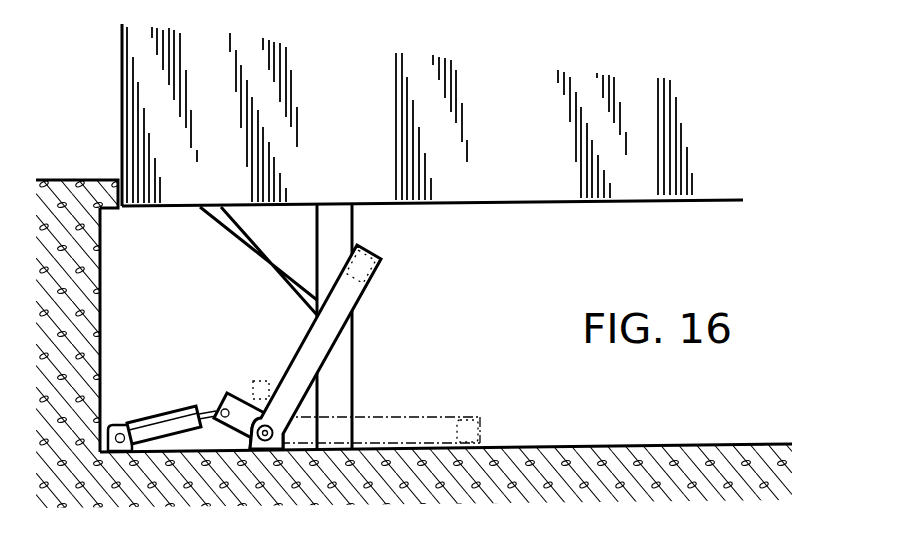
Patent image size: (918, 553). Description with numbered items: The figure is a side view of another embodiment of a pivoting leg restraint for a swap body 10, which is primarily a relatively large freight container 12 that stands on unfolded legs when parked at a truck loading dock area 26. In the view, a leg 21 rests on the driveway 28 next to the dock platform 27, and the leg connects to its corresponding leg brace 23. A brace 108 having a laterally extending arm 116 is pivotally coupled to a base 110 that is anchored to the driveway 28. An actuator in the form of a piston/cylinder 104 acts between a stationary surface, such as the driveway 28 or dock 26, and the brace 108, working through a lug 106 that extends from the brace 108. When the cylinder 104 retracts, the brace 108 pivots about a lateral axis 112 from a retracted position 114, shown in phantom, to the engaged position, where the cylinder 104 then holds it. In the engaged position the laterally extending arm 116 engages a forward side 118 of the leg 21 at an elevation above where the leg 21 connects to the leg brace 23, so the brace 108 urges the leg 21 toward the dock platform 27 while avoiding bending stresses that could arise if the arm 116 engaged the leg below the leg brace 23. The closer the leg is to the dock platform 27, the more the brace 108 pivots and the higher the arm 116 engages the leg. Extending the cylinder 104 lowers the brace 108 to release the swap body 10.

The swap body 10 is at (516, 252).
The freight container 12 is at (598, 206).
The leg 21 is at (352, 214).
The leg brace 23 is at (263, 268).
The truck loading dock area 26 is at (100, 305).
The dock platform 27 is at (108, 178).
The driveway 28 is at (595, 443).
The piston/cylinder 104 is at (182, 407).
The lug 106 is at (242, 392).
The brace 108 is at (340, 332).
The base 110 is at (250, 437).
The lateral axis 112 is at (268, 440).
The retracted position 114 is at (480, 433).
The laterally extending arm 116 is at (368, 273).
The forward side 118 is at (350, 387).